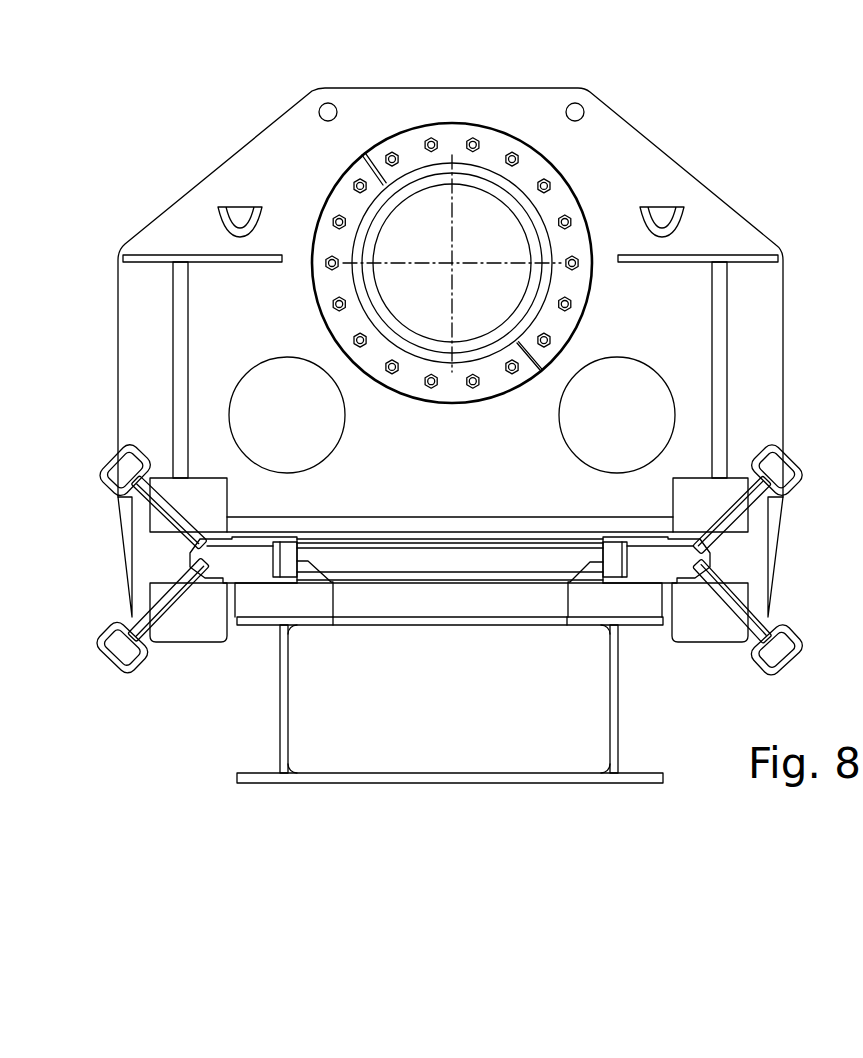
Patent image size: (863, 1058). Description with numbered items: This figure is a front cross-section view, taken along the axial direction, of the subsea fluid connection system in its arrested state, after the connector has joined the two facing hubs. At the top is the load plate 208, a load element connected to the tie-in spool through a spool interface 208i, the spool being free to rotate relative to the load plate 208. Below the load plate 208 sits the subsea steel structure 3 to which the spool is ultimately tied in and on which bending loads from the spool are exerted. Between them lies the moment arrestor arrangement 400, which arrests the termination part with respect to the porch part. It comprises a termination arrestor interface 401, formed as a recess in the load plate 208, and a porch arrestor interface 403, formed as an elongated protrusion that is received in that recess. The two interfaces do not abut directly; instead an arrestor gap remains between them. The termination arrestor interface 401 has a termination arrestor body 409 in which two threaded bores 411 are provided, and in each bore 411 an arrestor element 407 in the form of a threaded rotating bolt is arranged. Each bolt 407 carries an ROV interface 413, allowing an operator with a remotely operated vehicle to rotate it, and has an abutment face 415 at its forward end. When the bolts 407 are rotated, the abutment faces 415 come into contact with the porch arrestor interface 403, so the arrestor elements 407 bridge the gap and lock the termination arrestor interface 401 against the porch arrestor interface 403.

The subsea steel structure 3 is at (277, 718).
The load plate 208 is at (270, 155).
The spool interface 208i is at (360, 208).
The moment arrestor arrangement 400 is at (437, 443).
The termination arrestor interface 401 is at (216, 585).
The porch arrestor interface 403 is at (218, 558).
The arrestor element 407 is at (436, 529).
The termination arrestor body 409 is at (182, 625).
The threaded bore 411 is at (176, 512).
The ROV interface 413 is at (115, 665).
The abutment face 415 is at (692, 567).